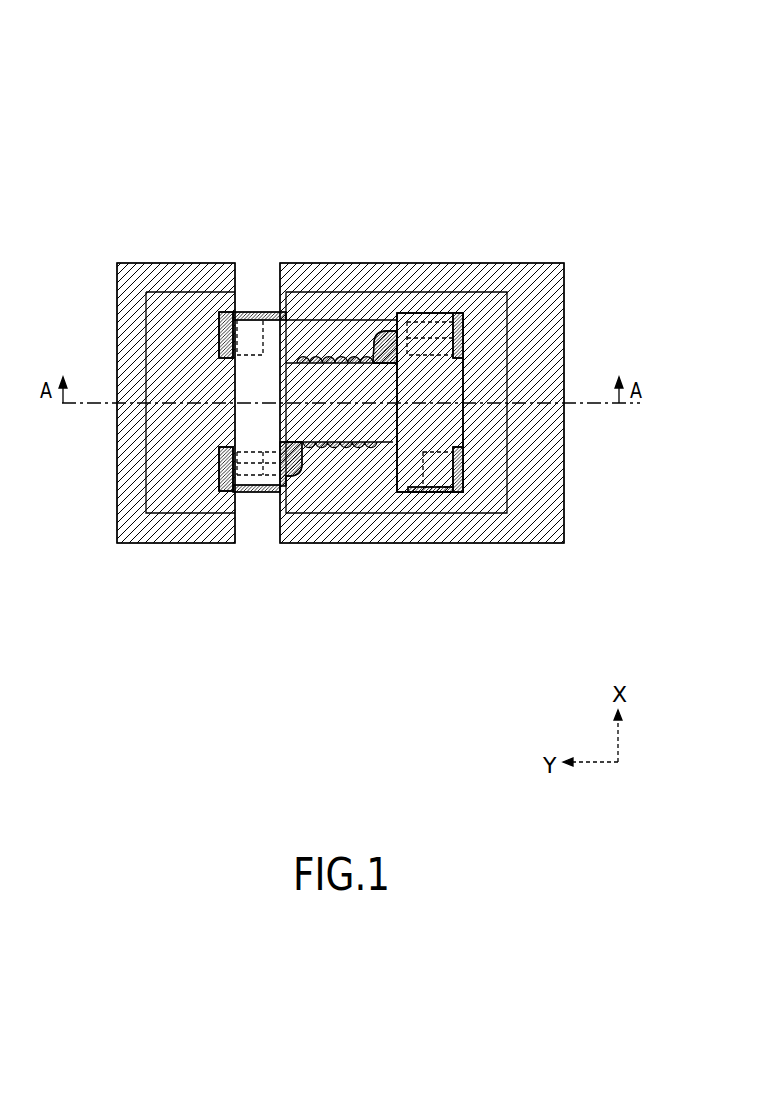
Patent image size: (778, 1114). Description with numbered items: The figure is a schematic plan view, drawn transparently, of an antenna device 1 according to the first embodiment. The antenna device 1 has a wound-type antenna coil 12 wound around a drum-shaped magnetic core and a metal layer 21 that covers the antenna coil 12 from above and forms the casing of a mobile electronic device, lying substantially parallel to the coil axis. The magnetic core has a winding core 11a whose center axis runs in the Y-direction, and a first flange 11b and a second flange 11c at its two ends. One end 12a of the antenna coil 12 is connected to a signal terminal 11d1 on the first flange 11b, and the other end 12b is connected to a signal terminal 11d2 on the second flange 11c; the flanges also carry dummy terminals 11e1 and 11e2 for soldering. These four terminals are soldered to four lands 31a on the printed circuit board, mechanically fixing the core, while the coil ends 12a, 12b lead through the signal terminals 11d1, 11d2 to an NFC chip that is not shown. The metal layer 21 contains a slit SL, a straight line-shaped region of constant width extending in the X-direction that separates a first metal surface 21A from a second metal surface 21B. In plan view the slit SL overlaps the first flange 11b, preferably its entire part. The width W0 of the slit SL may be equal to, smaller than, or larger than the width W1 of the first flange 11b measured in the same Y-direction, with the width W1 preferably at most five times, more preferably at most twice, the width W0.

The antenna device 1 is at (350, 165).
The winding core 11a is at (342, 380).
The first flange 11b is at (245, 387).
The second flange 11c is at (440, 392).
The signal terminal 11d1 is at (245, 476).
The signal terminal 11d2 is at (440, 308).
The dummy terminal 11e1 is at (224, 312).
The dummy terminal 11e2 is at (430, 476).
The antenna coil 12 is at (338, 453).
The one end of the antenna coil 12a is at (283, 492).
The other end of the antenna coil 12b is at (387, 322).
The metal layer 21 is at (340, 486).
The first metal surface 21A is at (235, 543).
The second metal surface 21B is at (563, 543).
The land 31a is at (228, 318).
The width of the first flange W1 is at (285, 263).
The width of the slit W0 is at (280, 263).
The slit SL is at (257, 284).